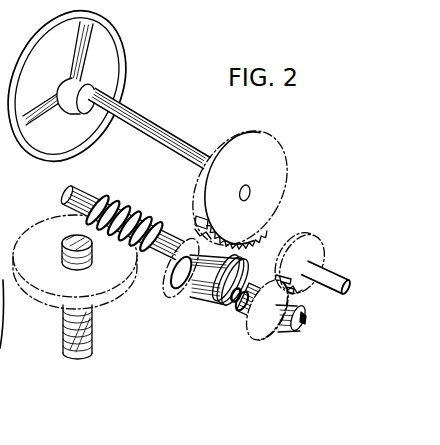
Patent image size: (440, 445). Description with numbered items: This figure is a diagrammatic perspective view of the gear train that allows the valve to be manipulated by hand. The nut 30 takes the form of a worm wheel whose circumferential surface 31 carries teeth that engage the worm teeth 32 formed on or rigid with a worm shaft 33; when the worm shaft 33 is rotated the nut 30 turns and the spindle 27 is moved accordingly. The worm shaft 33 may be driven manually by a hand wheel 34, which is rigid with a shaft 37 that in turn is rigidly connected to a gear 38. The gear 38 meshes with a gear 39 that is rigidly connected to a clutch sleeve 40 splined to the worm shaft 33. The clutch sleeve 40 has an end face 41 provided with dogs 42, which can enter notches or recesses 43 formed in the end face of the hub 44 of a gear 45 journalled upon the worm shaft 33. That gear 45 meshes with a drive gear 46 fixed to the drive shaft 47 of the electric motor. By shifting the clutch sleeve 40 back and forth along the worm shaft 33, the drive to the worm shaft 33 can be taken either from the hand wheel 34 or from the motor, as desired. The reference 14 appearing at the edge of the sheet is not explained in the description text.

The frame 14 is at (0, 386).
The spindle 27 is at (92, 335).
The nut 30 is at (44, 231).
The circumferential surface 31 is at (134, 288).
The worm teeth 32 is at (140, 212).
The worm shaft 33 is at (90, 190).
The hand wheel 34 is at (118, 96).
The shaft 37 is at (180, 147).
The gear 38 is at (286, 159).
The gear 39 is at (198, 300).
The clutch sleeve 40 is at (224, 259).
The end face 41 is at (258, 286).
The dogs 42 is at (231, 302).
The notches or recesses 43 is at (245, 312).
The hub 44 is at (290, 268).
The gear 45 is at (274, 340).
The drive gear 46 is at (313, 251).
The drive shaft 47 is at (331, 294).